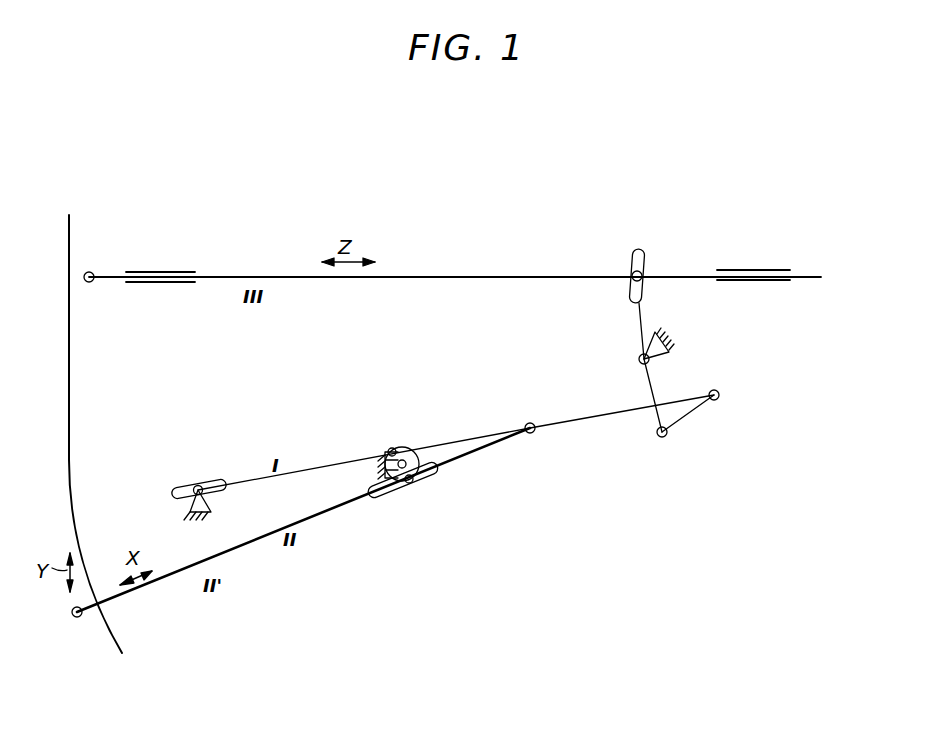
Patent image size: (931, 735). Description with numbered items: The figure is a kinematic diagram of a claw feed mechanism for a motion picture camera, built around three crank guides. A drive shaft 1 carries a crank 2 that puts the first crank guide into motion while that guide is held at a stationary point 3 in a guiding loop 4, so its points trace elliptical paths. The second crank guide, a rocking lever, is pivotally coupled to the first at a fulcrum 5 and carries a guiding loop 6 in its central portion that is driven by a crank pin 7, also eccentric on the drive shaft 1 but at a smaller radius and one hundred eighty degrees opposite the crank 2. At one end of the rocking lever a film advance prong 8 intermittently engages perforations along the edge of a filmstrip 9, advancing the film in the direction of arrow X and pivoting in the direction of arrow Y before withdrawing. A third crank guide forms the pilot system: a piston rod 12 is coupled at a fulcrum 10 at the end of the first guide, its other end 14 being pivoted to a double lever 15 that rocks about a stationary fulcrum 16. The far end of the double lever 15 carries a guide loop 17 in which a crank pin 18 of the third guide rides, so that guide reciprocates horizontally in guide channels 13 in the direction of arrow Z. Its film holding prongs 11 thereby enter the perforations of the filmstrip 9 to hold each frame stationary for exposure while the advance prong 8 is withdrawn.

The drive shaft 1 is at (403, 450).
The crank 2 is at (389, 449).
The stationary point 3 is at (198, 485).
The guiding loop 4 is at (184, 497).
The fulcrum 5 is at (529, 423).
The guiding loop 6 is at (376, 501).
The crank pin 7 is at (411, 486).
The film advance prong 8 is at (76, 620).
The filmstrip 9 is at (118, 637).
The fulcrum 10 is at (720, 399).
The film holding prongs 11 is at (92, 272).
The piston rod 12 is at (688, 419).
The guide channels 13 is at (168, 273).
The other end of piston rod 14 is at (660, 440).
The double lever 15 is at (655, 385).
The stationary fulcrum 16 is at (639, 359).
The guide loop 17 is at (643, 251).
The crank pin 18 is at (632, 275).